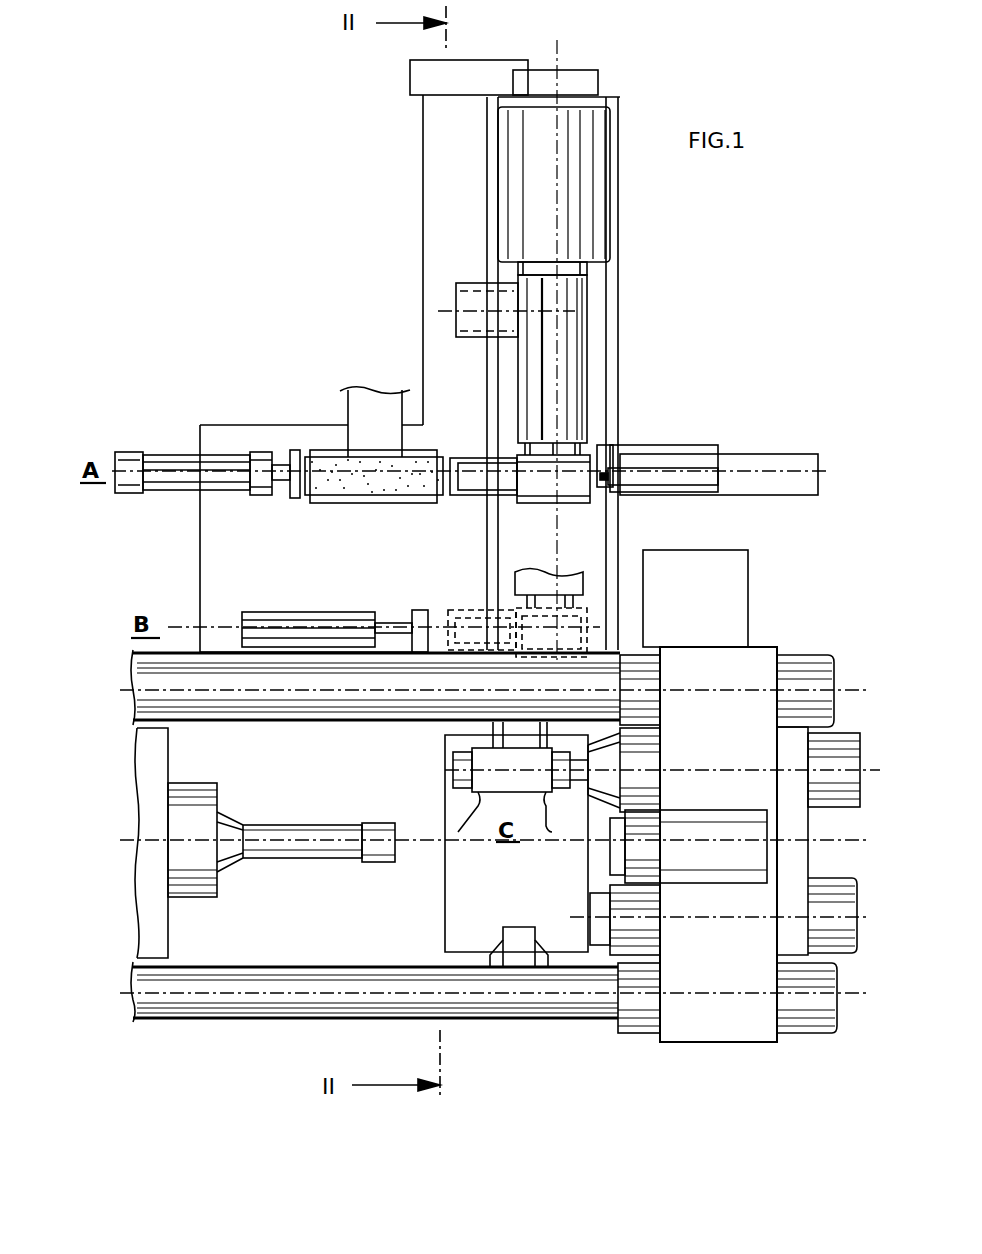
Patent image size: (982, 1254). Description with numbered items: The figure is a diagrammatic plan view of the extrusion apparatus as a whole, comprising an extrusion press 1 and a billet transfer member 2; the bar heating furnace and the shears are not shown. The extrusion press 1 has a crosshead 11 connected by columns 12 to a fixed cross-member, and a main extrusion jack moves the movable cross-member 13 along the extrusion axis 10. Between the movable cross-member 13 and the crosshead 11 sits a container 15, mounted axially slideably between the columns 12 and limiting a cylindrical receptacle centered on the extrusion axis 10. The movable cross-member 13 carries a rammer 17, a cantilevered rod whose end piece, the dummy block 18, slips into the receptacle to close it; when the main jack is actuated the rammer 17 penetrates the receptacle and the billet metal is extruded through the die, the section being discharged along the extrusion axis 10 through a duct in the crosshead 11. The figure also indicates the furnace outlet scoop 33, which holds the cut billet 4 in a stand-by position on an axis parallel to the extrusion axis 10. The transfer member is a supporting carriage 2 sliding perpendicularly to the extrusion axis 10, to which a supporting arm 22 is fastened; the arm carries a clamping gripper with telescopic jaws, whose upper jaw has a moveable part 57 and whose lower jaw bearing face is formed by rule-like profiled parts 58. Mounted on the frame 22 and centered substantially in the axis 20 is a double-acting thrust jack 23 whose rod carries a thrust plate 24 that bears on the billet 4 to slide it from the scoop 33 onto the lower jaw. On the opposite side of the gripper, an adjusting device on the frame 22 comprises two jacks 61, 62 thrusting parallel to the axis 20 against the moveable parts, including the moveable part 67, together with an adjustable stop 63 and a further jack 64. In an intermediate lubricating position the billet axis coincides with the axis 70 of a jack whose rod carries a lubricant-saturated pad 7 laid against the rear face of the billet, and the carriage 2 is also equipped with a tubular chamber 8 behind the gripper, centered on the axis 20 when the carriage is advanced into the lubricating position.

The extrusion press 1 is at (253, 1045).
The transfer member 2 is at (104, 612).
The billet 4 is at (336, 453).
The pad 7 is at (435, 607).
The tubular chamber 8 is at (475, 283).
The extrusion axis 10 is at (703, 855).
The crosshead 11 is at (683, 1028).
The columns 12 is at (547, 1008).
The movable cross-member 13 is at (147, 940).
The container 15 is at (450, 893).
The rammer 17 is at (268, 850).
The dummy block 18 is at (381, 858).
The axis 20 is at (410, 473).
The supporting arm 22 is at (262, 442).
The double-acting thrust jack 23 is at (168, 462).
The thrust plate 24 is at (290, 500).
The furnace outlet scoop 33 is at (320, 450).
The moveable part of the upper jaw 57 is at (472, 470).
The rule-like profiled parts 58 is at (462, 497).
The jack 61 is at (647, 480).
The jack 62 is at (664, 468).
The stop 63 is at (600, 452).
The jack 64 is at (752, 455).
The moveable part 67 is at (678, 472).
The axis 70 is at (330, 612).